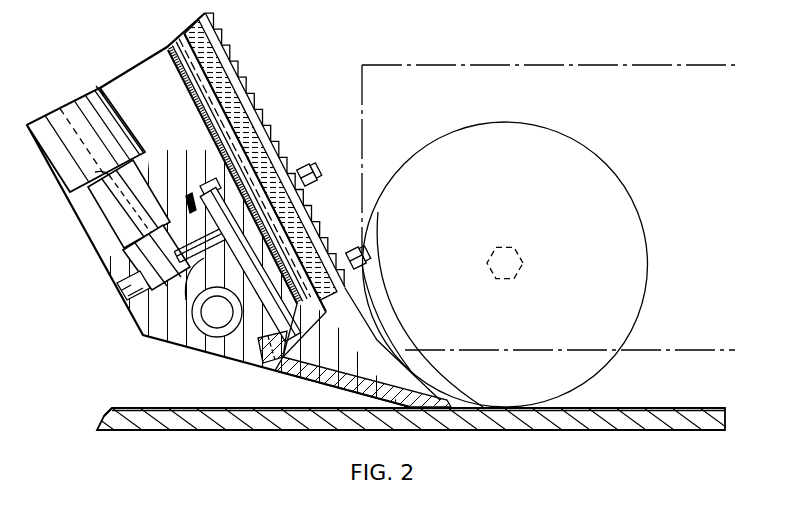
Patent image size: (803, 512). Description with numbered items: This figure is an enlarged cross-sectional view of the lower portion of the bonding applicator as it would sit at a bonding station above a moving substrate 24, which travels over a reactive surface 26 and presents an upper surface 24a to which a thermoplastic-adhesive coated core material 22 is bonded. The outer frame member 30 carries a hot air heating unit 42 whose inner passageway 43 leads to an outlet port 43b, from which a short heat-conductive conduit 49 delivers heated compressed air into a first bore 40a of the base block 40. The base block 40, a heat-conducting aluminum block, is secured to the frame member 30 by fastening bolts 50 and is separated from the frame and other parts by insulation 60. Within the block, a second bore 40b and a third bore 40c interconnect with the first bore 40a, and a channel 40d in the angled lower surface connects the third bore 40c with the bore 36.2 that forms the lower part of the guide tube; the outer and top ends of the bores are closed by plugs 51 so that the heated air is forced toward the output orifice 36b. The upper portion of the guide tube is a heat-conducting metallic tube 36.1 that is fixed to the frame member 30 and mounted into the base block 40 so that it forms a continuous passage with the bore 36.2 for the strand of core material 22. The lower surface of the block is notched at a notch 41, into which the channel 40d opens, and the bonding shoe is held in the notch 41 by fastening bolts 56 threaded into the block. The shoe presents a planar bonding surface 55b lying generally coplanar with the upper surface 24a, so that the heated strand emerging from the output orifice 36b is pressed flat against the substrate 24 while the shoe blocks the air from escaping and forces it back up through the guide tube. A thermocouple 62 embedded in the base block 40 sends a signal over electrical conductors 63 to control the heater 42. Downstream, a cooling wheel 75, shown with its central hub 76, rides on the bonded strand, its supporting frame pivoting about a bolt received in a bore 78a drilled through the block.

The thermoplastic-adhesive coated core material 22 is at (297, 253).
The substrate 24 is at (197, 422).
The upper surface of substrate 24a is at (122, 408).
The reactive surface 26 is at (304, 421).
The frame member 30 is at (243, 92).
The heat-conducting metallic tube 36.1 is at (190, 78).
The bore 36.2 is at (381, 252).
The output orifice 36b is at (372, 328).
The base block 40 is at (145, 320).
The first bore 40a is at (127, 273).
The second bore 40b is at (196, 272).
The third bore 40c is at (237, 262).
The channel 40d is at (273, 377).
The notch 41 is at (258, 368).
The hot air heating unit 42 is at (91, 100).
The inner passageway 43 is at (75, 118).
The outlet port 43b is at (117, 218).
The heat-conductive conduit 49 is at (147, 250).
The fastening bolts 50 is at (303, 165).
The plugs 51 is at (212, 184).
The bonding surface 55b is at (322, 383).
The fastening bolts 56 is at (353, 388).
The insulation 60 is at (253, 133).
The thermocouple 62 is at (190, 196).
The electrical conductors 63 is at (128, 103).
The cooling wheel 75 is at (596, 168).
The roller shaft 76 is at (522, 270).
The bore 78a is at (212, 318).